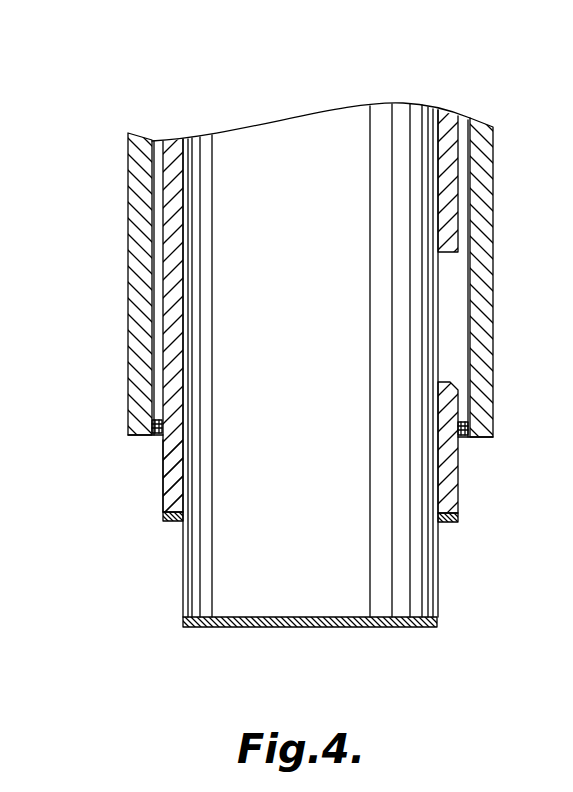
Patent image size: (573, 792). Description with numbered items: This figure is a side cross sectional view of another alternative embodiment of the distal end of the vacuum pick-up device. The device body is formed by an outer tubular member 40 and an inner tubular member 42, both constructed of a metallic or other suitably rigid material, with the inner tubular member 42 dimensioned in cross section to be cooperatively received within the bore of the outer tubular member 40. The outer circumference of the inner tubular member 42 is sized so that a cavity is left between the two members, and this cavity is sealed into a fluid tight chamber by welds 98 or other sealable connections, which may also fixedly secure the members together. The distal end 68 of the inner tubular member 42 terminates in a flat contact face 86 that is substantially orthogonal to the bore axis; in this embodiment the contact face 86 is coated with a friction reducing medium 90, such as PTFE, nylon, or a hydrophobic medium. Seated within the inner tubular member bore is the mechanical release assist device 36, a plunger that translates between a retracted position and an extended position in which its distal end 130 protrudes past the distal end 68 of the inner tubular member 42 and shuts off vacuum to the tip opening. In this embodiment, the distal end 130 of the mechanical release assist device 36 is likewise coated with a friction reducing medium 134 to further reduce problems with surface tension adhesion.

The mechanical release assist device 36 is at (347, 125).
The outer tubular member 40 is at (137, 220).
The inner tubular member 42 is at (173, 157).
The distal end of the inner tubular member 68 is at (163, 492).
The flat contact face 86 is at (170, 522).
The friction reducing medium 90 is at (448, 522).
The welds 98 is at (465, 437).
The distal end of the mechanical release assist device 130 is at (410, 580).
The friction reducing medium 134 is at (355, 627).